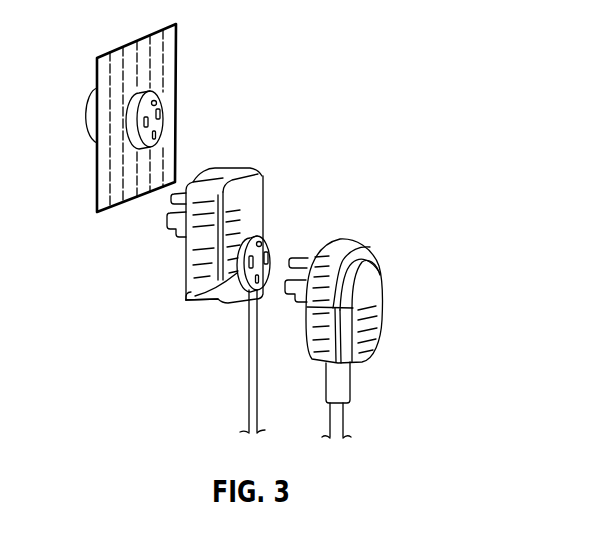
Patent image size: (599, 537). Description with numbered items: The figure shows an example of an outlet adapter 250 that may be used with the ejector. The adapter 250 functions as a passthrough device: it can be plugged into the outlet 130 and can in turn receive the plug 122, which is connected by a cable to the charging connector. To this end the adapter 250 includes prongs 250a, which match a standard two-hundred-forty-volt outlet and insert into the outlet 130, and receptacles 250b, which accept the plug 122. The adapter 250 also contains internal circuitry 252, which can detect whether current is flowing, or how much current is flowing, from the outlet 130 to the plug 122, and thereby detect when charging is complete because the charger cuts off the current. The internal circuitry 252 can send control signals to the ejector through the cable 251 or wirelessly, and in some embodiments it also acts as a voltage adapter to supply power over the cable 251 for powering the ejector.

The outlet 130 is at (168, 121).
The adapter 250 is at (267, 176).
The internal circuitry 252 is at (264, 221).
The prongs 250a is at (168, 227).
The receptacles 250b is at (195, 296).
The cable 251 is at (250, 358).
The plug 122 is at (385, 270).